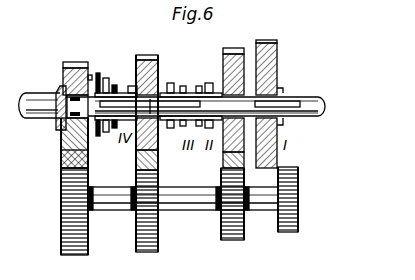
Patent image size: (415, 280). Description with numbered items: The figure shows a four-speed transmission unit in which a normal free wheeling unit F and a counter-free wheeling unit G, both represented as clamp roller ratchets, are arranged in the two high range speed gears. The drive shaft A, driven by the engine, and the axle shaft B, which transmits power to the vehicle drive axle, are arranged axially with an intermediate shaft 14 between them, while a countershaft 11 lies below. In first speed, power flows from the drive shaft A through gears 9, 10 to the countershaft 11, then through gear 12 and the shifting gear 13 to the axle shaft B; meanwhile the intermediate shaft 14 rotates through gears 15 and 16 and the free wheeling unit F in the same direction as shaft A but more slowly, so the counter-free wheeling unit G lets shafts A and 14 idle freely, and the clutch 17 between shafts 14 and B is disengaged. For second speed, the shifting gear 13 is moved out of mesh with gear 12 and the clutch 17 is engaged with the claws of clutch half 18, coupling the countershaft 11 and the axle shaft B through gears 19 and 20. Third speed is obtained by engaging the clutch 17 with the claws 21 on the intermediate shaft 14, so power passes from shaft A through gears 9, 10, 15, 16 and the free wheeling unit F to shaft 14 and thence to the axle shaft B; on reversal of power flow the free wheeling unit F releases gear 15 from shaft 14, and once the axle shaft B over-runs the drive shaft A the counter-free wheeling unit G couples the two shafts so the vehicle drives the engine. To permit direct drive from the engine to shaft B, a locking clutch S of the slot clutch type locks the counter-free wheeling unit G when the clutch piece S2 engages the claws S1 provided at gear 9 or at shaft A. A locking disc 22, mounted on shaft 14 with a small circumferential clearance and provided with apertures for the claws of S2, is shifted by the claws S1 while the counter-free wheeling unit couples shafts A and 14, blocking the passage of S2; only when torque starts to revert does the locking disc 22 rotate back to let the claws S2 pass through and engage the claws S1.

The drive shaft A is at (38, 113).
The axle shaft B is at (306, 98).
The counter-free wheeling unit G is at (58, 88).
The normal free wheeling unit F is at (139, 87).
The locking clutch S is at (107, 78).
The claws S1 is at (98, 137).
The clutch piece S2 is at (107, 133).
The gear 9 is at (75, 62).
The gear 10 is at (60, 240).
The countershaft 11 is at (196, 200).
The gear 12 is at (288, 233).
The shifting gear 13 is at (268, 40).
The intermediate shaft 14 is at (153, 102).
The gear 15 is at (135, 236).
The gear 16 is at (158, 120).
The clutch 17 is at (191, 92).
The clutch half 18 is at (209, 83).
The gear 19 is at (232, 241).
The gear 20 is at (234, 50).
The claws 21 is at (170, 83).
The locking disc 22 is at (98, 73).